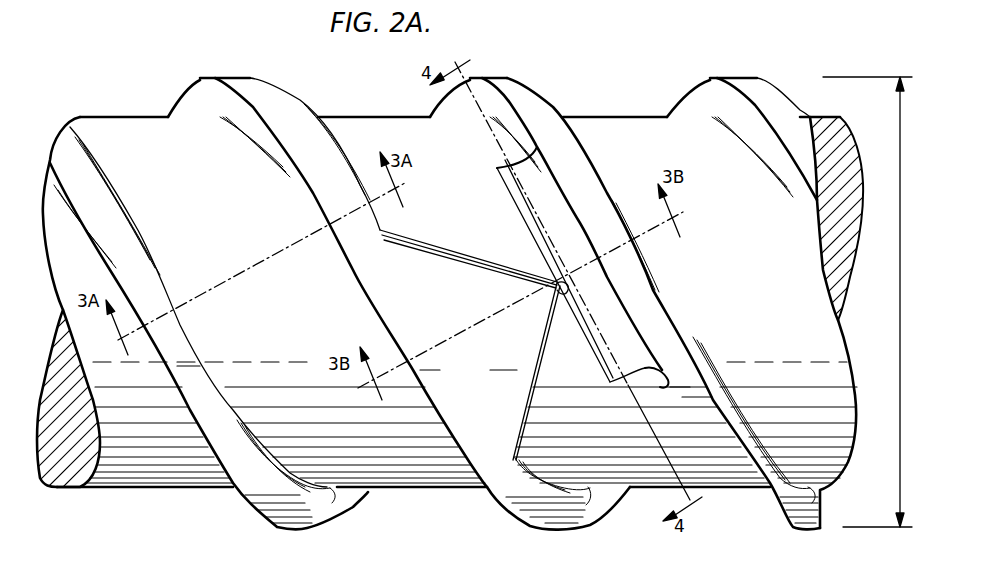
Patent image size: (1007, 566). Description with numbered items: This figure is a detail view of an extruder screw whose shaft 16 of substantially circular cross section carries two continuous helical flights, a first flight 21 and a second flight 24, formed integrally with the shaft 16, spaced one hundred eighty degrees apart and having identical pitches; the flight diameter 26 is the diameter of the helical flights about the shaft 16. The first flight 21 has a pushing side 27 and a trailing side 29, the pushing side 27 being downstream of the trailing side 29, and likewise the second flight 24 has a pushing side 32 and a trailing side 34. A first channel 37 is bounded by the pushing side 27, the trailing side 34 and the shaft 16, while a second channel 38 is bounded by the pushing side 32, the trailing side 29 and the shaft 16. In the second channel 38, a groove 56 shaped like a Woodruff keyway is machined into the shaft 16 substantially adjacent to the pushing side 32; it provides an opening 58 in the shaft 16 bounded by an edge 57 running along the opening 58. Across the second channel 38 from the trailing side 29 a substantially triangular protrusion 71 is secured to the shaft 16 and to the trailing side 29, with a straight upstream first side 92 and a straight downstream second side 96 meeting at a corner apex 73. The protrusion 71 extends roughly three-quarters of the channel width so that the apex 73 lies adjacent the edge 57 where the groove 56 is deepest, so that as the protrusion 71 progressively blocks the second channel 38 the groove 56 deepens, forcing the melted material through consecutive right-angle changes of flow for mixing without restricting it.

The shaft 16 is at (857, 143).
The first flight 21 is at (245, 78).
The second flight 24 is at (497, 78).
The flight diameter 26 is at (900, 262).
The pushing side 27 is at (207, 97).
The trailing side 29 is at (300, 100).
The pushing side 32 is at (448, 102).
The trailing side 34 is at (552, 100).
The first channel 37 is at (805, 338).
The second channel 38 is at (640, 462).
The groove 56 is at (557, 213).
The edge 57 is at (595, 362).
The opening 58 is at (668, 387).
The protrusion 71 is at (507, 369).
The apex 73 is at (560, 290).
The first side 92 is at (532, 398).
The second side 96 is at (455, 250).